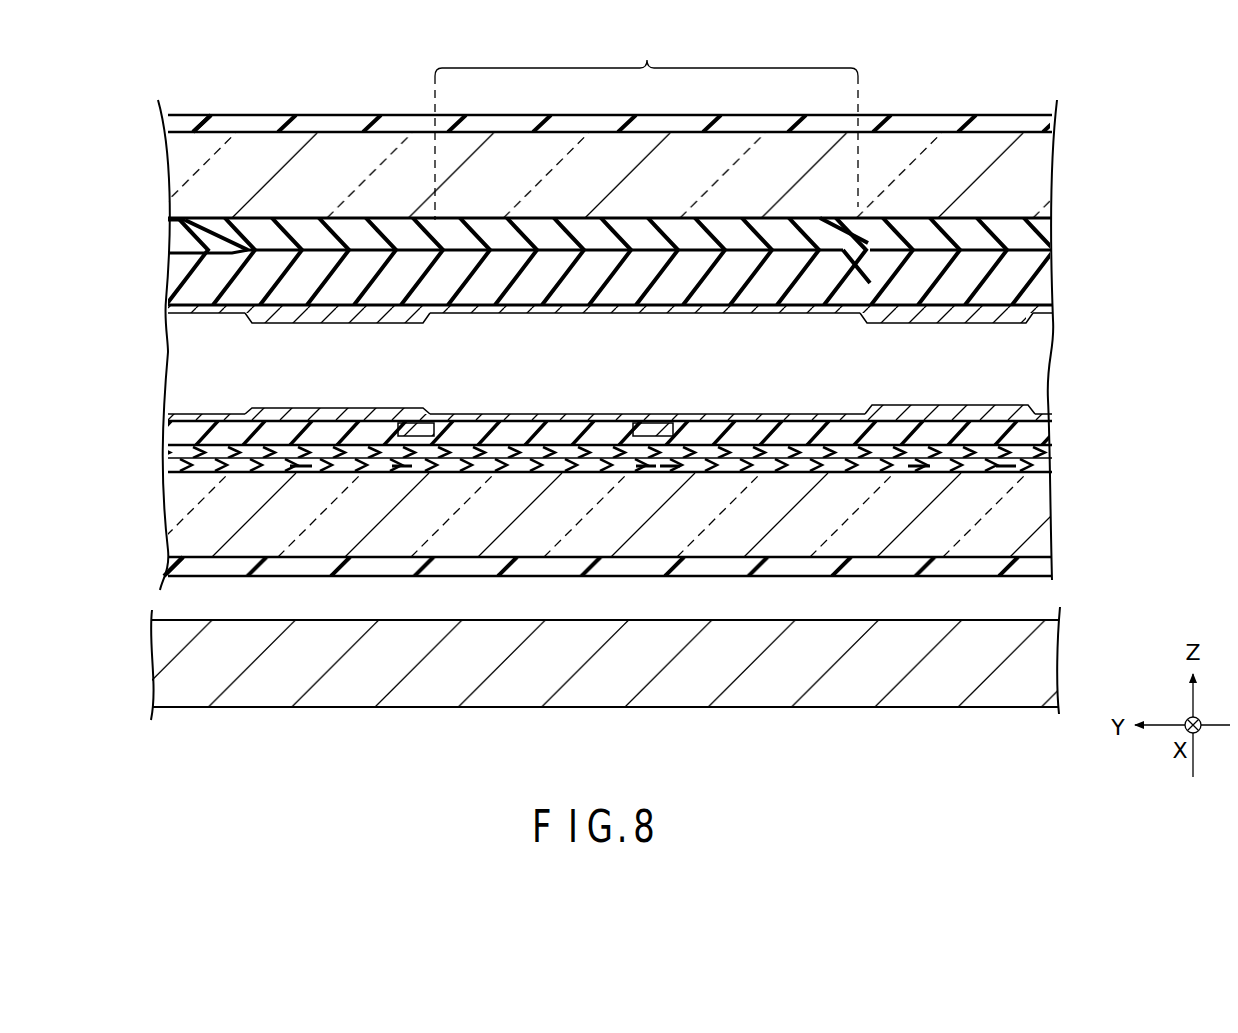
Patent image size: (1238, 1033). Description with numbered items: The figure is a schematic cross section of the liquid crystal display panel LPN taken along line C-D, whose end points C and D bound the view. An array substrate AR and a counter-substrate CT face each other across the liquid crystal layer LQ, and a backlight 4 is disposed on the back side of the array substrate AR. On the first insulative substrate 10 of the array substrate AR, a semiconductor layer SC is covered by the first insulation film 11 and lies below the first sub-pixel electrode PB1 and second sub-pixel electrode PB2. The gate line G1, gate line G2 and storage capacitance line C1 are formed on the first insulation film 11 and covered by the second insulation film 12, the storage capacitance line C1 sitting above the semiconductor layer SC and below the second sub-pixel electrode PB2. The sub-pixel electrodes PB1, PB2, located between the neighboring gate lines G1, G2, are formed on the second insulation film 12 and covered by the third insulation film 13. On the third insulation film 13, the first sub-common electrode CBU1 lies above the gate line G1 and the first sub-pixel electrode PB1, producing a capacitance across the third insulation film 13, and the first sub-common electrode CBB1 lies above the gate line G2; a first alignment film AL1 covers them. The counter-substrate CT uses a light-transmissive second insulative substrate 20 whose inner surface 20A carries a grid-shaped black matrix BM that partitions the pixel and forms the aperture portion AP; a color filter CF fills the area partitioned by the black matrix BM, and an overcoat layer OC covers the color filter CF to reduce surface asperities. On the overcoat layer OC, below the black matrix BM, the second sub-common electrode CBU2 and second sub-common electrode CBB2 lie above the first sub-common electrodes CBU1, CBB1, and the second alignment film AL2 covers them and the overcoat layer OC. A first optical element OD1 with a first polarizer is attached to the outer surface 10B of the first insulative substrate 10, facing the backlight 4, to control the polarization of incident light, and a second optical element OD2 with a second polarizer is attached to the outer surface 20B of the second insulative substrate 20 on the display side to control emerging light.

The liquid crystal display panel LPN is at (1066, 105).
The counter-substrate CT is at (160, 199).
The array substrate AR is at (163, 525).
The second optical element OD2 is at (172, 127).
The first optical element OD1 is at (175, 569).
The second insulative substrate 20 is at (1038, 159).
The inner surface 20A is at (186, 228).
The outer surface 20B is at (240, 123).
The first insulative substrate 10 is at (1040, 507).
The outer surface 10B is at (197, 574).
The black matrix BM is at (305, 228).
The aperture portion AP is at (646, 123).
The color filter CF is at (1040, 228).
The overcoat layer OC is at (1045, 267).
The second alignment film AL2 is at (1040, 311).
The first alignment film AL1 is at (1012, 410).
The second sub-common electrode CBU2 is at (300, 320).
The second sub-common electrode CBB2 is at (905, 310).
The first sub-common electrode CBU1 is at (300, 418).
The first sub-common electrode CBB1 is at (922, 410).
The first sub-pixel electrode PB1 is at (417, 424).
The second sub-pixel electrode PB2 is at (652, 424).
The liquid crystal layer LQ is at (186, 371).
The third insulation film 13 is at (1045, 424).
The second insulation film 12 is at (1050, 448).
The first insulation film 11 is at (1050, 462).
The gate line G1 is at (300, 474).
The gate line G2 is at (918, 474).
The semiconductor layer SC is at (400, 474).
The storage capacitance line C1 is at (645, 474).
The backlight 4 is at (1045, 672).
The section line C-D end point C is at (149, 746).
The section line C-D end point D is at (1060, 736).